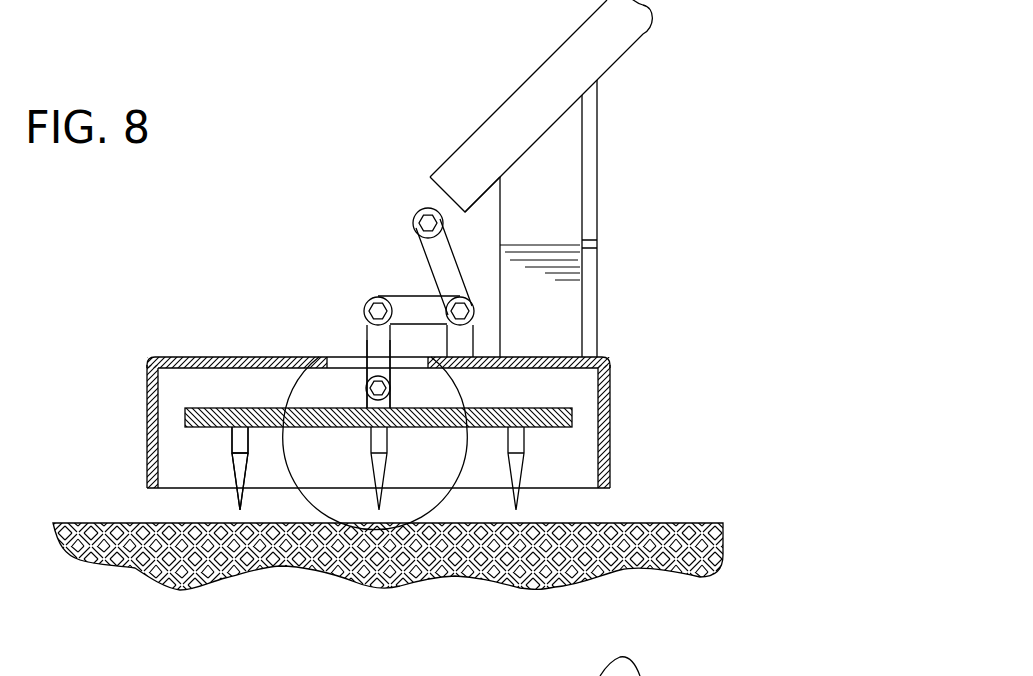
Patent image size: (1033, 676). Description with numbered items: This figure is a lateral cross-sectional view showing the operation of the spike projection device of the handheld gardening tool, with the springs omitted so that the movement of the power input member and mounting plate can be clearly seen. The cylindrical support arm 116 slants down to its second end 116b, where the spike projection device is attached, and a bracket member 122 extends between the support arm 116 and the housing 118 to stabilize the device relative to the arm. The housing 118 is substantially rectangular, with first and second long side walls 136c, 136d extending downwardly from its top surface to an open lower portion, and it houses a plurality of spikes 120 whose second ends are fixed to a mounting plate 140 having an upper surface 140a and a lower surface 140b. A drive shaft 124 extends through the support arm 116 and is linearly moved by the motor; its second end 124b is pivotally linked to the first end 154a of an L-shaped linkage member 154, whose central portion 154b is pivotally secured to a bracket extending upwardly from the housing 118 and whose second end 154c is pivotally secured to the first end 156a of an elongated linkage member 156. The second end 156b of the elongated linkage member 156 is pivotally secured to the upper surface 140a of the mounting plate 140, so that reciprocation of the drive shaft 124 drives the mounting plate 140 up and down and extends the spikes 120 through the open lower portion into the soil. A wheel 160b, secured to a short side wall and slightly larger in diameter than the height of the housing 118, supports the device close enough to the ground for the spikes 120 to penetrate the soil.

The cylindrical support arm 116 is at (608, 45).
The second end of support arm 116b is at (467, 212).
The housing 118 is at (277, 357).
The spikes 120 is at (225, 465).
The bracket member 122 is at (598, 285).
The drive shaft 124 is at (428, 207).
The second end of drive shaft 124b is at (418, 211).
The first long side wall 136c is at (147, 415).
The second long side wall 136d is at (610, 440).
The mounting plate 140 is at (190, 408).
The upper surface of mounting plate 140a is at (222, 412).
The lower surface of mounting plate 140b is at (283, 430).
The L-shaped linkage member 154 is at (420, 250).
The first end of L-shaped linkage member 154a is at (441, 222).
The central portion of L-shaped linkage member 154b is at (477, 323).
The second end of L-shaped linkage member 154c is at (390, 310).
The elongated linkage member 156 is at (391, 365).
The first end of elongated linkage member 156a is at (378, 297).
The second end of elongated linkage member 156b is at (395, 400).
The wheel 160b is at (335, 340).